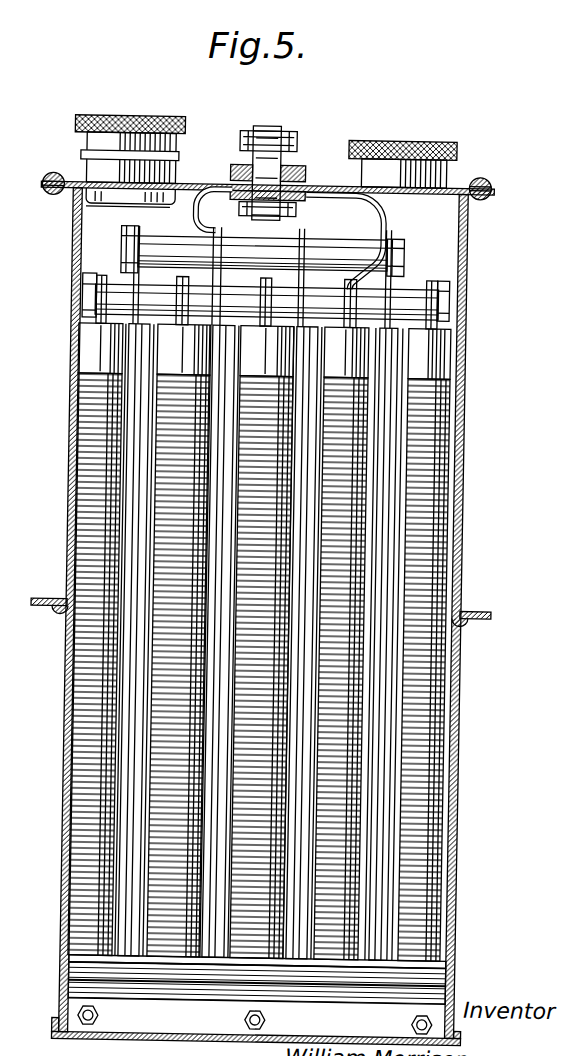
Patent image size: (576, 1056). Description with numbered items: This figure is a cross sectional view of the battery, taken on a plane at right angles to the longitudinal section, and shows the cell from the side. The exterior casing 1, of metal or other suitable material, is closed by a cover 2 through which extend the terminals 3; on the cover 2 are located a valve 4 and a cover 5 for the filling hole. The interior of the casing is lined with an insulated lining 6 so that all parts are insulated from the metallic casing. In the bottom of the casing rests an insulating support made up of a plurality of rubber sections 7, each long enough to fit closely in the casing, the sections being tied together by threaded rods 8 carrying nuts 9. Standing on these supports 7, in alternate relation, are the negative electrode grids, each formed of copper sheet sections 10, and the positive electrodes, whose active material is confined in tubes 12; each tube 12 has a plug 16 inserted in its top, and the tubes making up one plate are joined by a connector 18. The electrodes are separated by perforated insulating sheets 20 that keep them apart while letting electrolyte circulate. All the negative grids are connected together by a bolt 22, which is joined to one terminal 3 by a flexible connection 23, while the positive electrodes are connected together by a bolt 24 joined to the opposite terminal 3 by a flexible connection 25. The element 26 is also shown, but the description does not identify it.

The exterior casing 1 is at (451, 763).
The cover 2 is at (441, 175).
The terminals 3 is at (254, 120).
The valve 4 is at (117, 110).
The cover for the filling hole 5 is at (402, 131).
The insulated lining 6 is at (439, 970).
The sections of insulating support 7 is at (170, 1009).
The threaded rods 8 is at (87, 1020).
The nuts 9 is at (97, 1011).
The grid section 10 is at (378, 451).
The tubes 12 is at (428, 537).
The plug 16 is at (248, 352).
The connector 18 is at (67, 300).
The insulating sheets 20 is at (388, 356).
The bolt 22 is at (148, 237).
The flexible connection 23 is at (185, 185).
The bolt 24 is at (397, 287).
The flexible connection 25 is at (364, 211).
The bottom support bar 26 is at (392, 952).